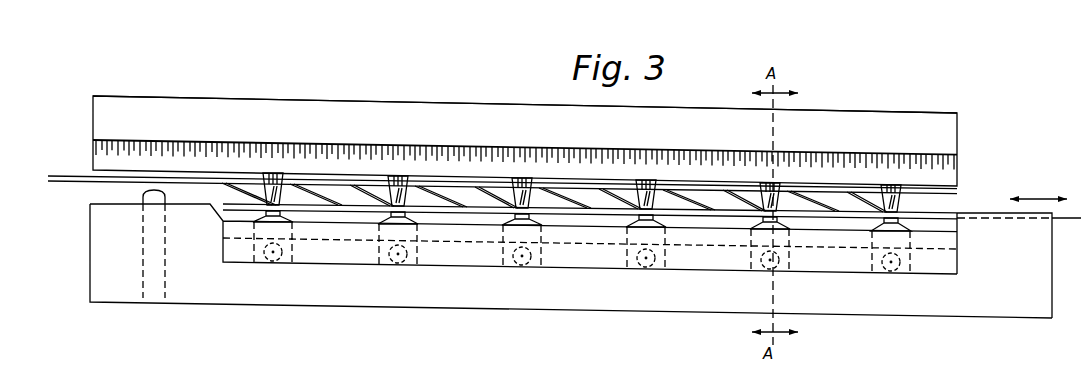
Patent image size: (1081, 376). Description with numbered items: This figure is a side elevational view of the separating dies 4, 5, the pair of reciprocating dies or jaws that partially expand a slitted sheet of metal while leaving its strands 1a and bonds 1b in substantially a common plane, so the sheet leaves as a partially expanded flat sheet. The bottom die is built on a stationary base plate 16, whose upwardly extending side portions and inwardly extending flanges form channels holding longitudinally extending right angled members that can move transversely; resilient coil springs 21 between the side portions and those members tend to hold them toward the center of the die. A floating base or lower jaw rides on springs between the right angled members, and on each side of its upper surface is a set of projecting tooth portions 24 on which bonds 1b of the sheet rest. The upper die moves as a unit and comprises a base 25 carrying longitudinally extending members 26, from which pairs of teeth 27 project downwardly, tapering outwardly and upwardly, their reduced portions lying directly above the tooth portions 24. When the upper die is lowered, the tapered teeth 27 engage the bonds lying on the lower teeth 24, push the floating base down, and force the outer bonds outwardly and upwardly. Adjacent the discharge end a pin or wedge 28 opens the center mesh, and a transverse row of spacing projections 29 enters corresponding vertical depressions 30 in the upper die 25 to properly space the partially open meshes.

The separating die 4 is at (880, 117).
The separating die 5 is at (916, 306).
The stationary base plate 16 is at (537, 309).
The coil springs 21 is at (390, 262).
The projecting tooth portions 24 is at (913, 214).
The base 25 is at (460, 117).
The longitudinally extending members 26 is at (618, 156).
The teeth 27 is at (390, 177).
The pin or wedge 28 is at (280, 174).
The spacing projections 29 is at (153, 212).
The vertical depressions 30 is at (90, 155).
The strands 1a is at (620, 199).
The bonds 1b is at (648, 216).